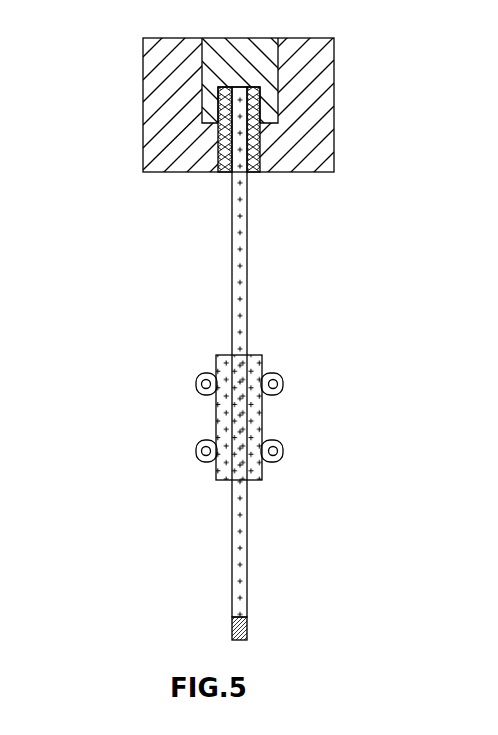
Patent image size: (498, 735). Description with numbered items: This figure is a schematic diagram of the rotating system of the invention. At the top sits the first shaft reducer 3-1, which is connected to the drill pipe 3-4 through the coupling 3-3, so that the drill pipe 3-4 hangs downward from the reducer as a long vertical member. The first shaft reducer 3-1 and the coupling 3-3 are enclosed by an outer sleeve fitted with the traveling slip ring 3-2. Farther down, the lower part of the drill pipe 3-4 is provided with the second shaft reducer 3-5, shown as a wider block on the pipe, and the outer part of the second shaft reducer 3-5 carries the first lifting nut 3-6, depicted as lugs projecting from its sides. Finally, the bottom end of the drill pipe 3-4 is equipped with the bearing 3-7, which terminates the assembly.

The first shaft reducer 3-1 is at (229, 45).
The traveling slip ring 3-2 is at (173, 88).
The coupling 3-3 is at (220, 158).
The drill pipe 3-4 is at (240, 273).
The second shaft reducer 3-5 is at (230, 365).
The first lifting nut 3-6 is at (197, 450).
The bearing 3-7 is at (232, 625).